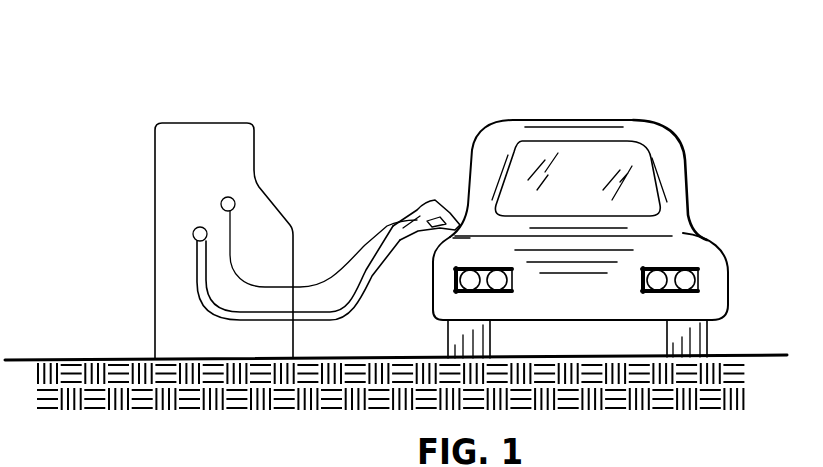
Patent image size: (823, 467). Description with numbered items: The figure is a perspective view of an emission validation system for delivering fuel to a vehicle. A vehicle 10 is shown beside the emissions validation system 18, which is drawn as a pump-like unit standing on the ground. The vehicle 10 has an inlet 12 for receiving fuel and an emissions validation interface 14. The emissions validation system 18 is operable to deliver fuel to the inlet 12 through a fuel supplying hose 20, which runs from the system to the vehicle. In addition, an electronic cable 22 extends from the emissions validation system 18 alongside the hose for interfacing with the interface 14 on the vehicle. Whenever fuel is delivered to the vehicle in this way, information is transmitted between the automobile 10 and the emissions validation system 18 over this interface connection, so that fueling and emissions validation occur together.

The vehicle 10 is at (667, 152).
The inlet 12 is at (455, 228).
The emissions validation interface 14 is at (460, 223).
The emissions validation system 18 is at (202, 142).
The fuel supplying hose 20 is at (200, 280).
The electronic cable 22 is at (366, 243).